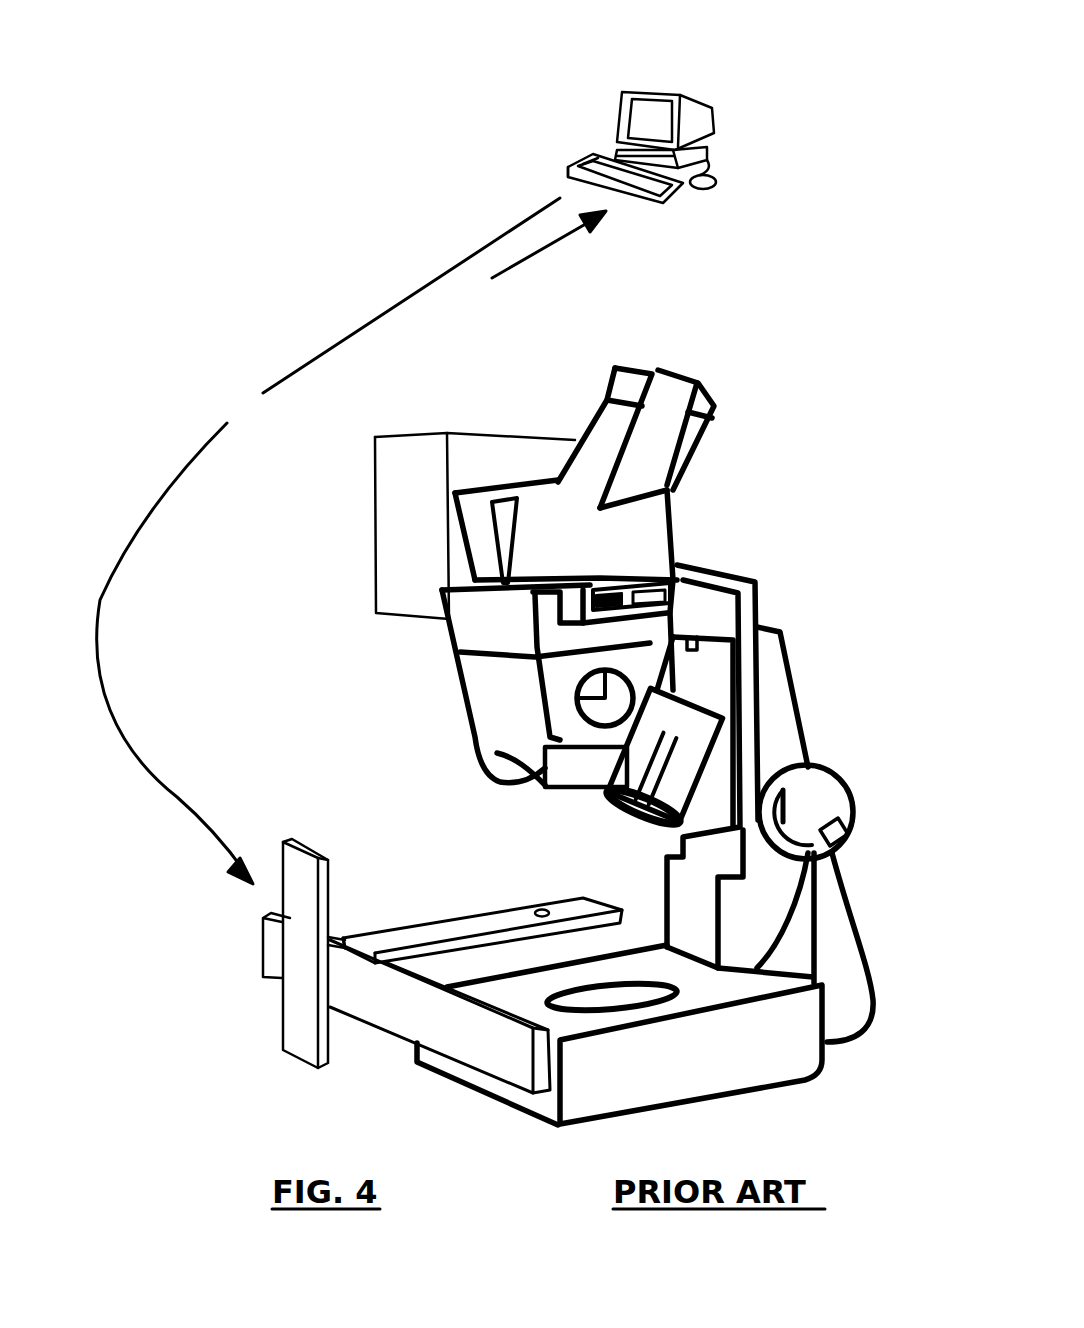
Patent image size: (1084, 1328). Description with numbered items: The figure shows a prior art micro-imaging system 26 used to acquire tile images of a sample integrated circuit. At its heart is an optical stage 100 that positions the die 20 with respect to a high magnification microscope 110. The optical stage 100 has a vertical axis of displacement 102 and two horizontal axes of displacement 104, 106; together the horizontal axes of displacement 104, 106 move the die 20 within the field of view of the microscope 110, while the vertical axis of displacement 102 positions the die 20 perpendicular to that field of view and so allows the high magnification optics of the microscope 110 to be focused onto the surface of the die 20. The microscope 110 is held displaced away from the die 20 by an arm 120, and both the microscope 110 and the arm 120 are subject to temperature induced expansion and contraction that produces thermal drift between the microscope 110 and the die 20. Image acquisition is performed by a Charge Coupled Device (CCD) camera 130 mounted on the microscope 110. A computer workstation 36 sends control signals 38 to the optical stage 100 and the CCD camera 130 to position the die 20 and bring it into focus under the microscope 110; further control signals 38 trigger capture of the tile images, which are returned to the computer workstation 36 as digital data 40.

The computer workstation 36 is at (655, 112).
The control signals 38 is at (298, 365).
The digital data 40 is at (448, 318).
The micro-imaging system 26 is at (814, 576).
The Charge Coupled Device (CCD) camera 130 is at (395, 592).
The high magnification microscope 110 is at (497, 738).
The arm 120 is at (785, 727).
The optical stage 100 is at (234, 947).
The vertical axis of displacement 102 is at (310, 1043).
The horizontal axis of displacement 104 is at (387, 1013).
The horizontal axis of displacement 106 is at (453, 925).
The die 20 is at (537, 910).